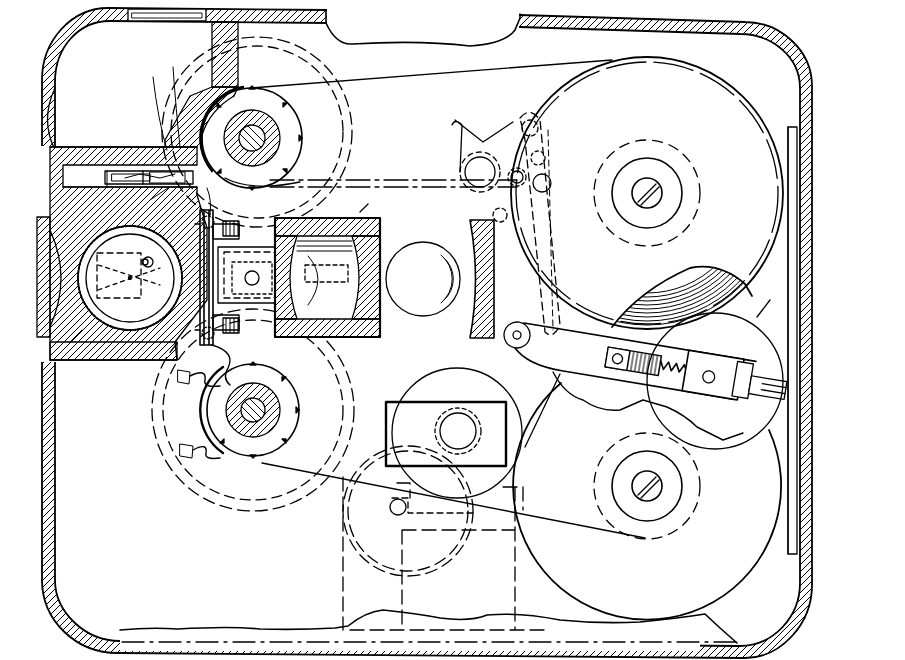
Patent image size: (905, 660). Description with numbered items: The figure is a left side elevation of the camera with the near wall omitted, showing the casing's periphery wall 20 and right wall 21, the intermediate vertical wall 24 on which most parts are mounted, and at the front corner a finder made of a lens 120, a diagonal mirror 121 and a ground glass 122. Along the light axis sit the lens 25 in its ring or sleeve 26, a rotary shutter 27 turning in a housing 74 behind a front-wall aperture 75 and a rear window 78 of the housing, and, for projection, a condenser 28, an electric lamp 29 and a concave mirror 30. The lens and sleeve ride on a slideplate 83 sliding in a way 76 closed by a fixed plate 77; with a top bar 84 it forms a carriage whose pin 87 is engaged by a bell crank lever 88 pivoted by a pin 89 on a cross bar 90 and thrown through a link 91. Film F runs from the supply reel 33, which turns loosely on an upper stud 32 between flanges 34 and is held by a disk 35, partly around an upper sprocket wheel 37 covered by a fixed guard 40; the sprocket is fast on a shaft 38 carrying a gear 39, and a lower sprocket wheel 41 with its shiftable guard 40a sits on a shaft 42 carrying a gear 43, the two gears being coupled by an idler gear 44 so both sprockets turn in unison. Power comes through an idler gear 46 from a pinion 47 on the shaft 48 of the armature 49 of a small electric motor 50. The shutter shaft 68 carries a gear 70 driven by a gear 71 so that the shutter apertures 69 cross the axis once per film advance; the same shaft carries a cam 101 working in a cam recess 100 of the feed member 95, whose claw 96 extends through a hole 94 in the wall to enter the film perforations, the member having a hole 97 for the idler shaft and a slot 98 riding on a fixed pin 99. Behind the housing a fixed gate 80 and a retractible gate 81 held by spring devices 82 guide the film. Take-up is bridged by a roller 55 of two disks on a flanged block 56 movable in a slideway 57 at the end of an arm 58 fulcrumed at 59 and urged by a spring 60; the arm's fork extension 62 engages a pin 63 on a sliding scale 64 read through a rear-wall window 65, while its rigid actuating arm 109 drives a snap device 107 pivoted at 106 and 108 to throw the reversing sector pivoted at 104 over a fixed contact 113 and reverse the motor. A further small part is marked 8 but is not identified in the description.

The pin 8 is at (145, 263).
The periphery wall 20 is at (50, 540).
The right wall 21 is at (420, 625).
The intermediate vertical wall 24 is at (647, 188).
The lens 25 is at (130, 278).
The ring or sleeve 26 is at (55, 148).
The shutter 27 is at (135, 360).
The condenser or lens system 28 is at (328, 288).
The electric lamp 29 is at (423, 279).
The concave mirror 30 is at (470, 236).
The upper spindle or stud 32 is at (662, 198).
The film supply reel or spool 33 is at (678, 148).
The side flanges 34 is at (757, 113).
The disk or washer 35 is at (680, 180).
The upper sprocket wheel 37 is at (302, 148).
The shaft 38 is at (280, 135).
The gear 39 is at (345, 100).
The fixed guard or guide 40 is at (267, 126).
The shiftable guard 40a is at (224, 415).
The lower sprocket wheel 41 is at (299, 432).
The shaft 42 is at (281, 400).
The gear 43 is at (322, 64).
The idler gear 44 is at (262, 247).
The idler gear 46 is at (343, 547).
The pinion 47 is at (436, 428).
The shaft 48 is at (492, 466).
The armature 49 is at (460, 368).
The electric motor 50 is at (341, 592).
The rolling device or roller 55 is at (745, 330).
The flanged block 56 is at (718, 345).
The slideway 57 is at (746, 343).
The shiftable or swingable carrier or arm 58 is at (646, 348).
The fulcrum 59 is at (517, 320).
The spring 60 is at (643, 383).
The extension 62 is at (755, 401).
The projection or pin 63 is at (781, 360).
The sliding scale 64 is at (792, 480).
The rear wall window 65 is at (797, 277).
The shaft 68 is at (130, 278).
The shutter apertures 69 is at (143, 260).
The gear 70 is at (82, 352).
The gear 71 is at (370, 201).
The housing 74 is at (110, 362).
The aperture 75 is at (58, 277).
The recess or way 76 is at (110, 405).
The fixed plate 77 is at (90, 400).
The aperture or window 78 is at (214, 363).
The fixed gate 80 is at (205, 201).
The movable or retractible gate 81 is at (201, 412).
The spring devices 82 is at (216, 225).
The slideplate 83 is at (105, 177).
The bar 84 is at (107, 170).
The pin 87 is at (150, 171).
The bell crank lever 88 is at (150, 170).
The pin 89 is at (178, 112).
The cross bar 90 is at (146, 201).
The link 91 is at (390, 180).
The hole 94 is at (229, 332).
The feed member 95 is at (324, 261).
The engager or claw extension 96 is at (238, 224).
The hole 97 is at (240, 312).
The slot 98 is at (295, 184).
The fixed pin 99 is at (372, 337).
The cam recess or hole 100 is at (108, 362).
The cam 101 is at (130, 201).
The pivot 104 is at (520, 140).
The pivot 106 is at (453, 123).
The spring piece or snap device 107 is at (462, 170).
The pivot 108 is at (548, 172).
The actuating arm 109 is at (562, 272).
The fixed contact 113 is at (492, 210).
The lens 120 is at (57, 100).
The diagonal mirror 121 is at (159, 102).
The ground glass 122 is at (172, 20).
The film F is at (385, 78).